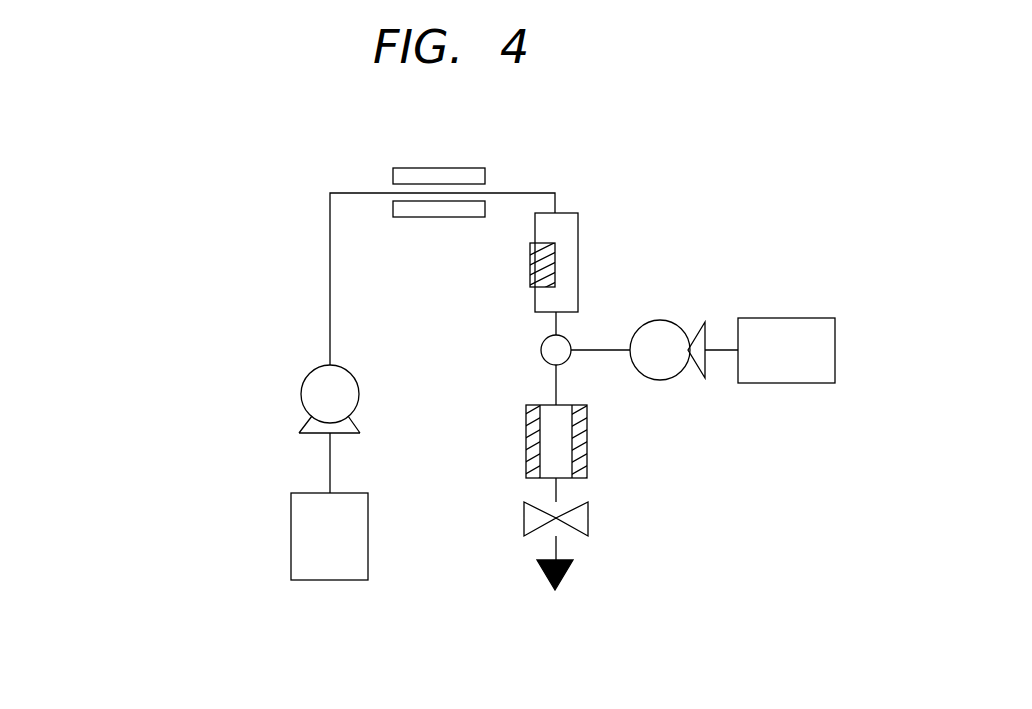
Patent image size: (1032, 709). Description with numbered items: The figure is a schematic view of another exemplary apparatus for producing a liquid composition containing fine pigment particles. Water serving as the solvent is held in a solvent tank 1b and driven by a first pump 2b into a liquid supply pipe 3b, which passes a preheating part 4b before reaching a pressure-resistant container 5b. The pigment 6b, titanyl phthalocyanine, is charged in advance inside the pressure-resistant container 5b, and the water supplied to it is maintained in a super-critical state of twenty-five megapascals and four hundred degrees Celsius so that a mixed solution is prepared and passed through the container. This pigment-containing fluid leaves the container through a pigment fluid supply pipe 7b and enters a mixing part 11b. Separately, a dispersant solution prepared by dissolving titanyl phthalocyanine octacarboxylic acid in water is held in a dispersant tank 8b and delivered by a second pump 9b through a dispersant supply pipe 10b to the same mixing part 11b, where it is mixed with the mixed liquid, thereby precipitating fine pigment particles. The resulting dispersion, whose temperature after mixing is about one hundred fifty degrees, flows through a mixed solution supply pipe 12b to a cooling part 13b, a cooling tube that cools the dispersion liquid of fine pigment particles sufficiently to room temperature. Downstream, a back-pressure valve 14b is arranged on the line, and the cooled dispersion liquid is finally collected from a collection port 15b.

The solvent tank 1b is at (328, 580).
The first pump 2b is at (301, 386).
The liquid supply pipe 3b is at (329, 213).
The preheating part 4b is at (453, 168).
The pressure-resistant container 5b is at (573, 213).
The pigment 6b is at (530, 262).
The pigment fluid supply pipe 7b is at (556, 321).
The dispersant tank 8b is at (800, 318).
The second pump 9b is at (672, 333).
The dispersant supply pipe 10b is at (597, 350).
The mixing part 11b is at (541, 350).
The mixed solution supply pipe 12b is at (556, 382).
The cooling part 13b is at (587, 452).
The back-pressure valve 14b is at (588, 516).
The collection port 15b is at (568, 571).